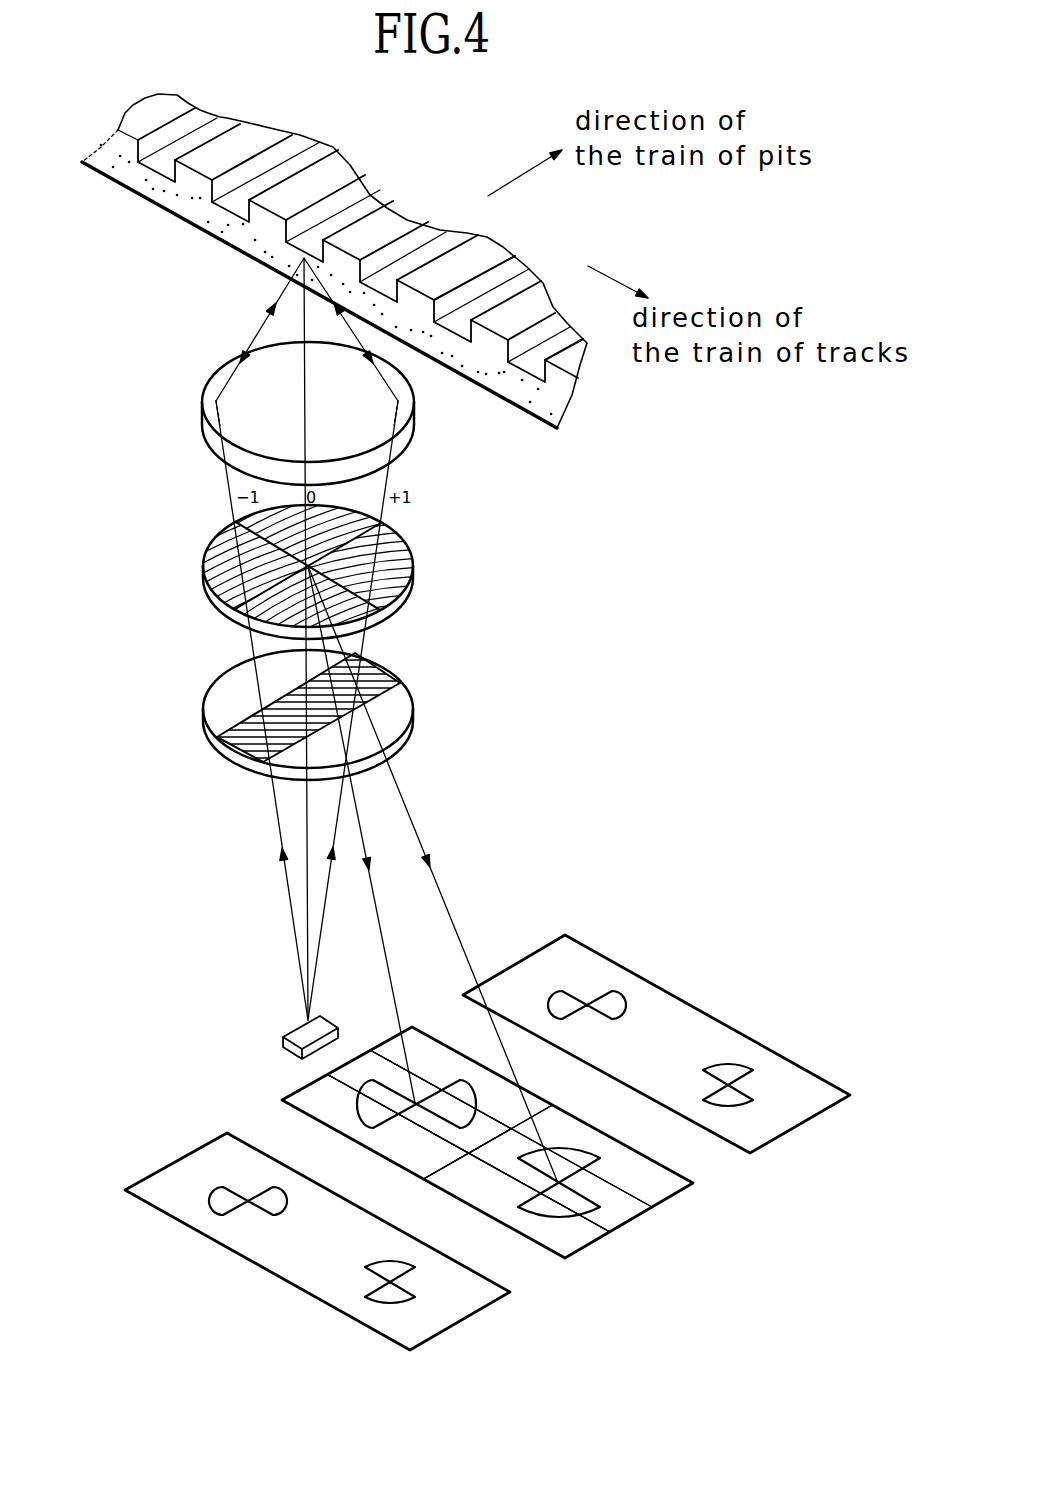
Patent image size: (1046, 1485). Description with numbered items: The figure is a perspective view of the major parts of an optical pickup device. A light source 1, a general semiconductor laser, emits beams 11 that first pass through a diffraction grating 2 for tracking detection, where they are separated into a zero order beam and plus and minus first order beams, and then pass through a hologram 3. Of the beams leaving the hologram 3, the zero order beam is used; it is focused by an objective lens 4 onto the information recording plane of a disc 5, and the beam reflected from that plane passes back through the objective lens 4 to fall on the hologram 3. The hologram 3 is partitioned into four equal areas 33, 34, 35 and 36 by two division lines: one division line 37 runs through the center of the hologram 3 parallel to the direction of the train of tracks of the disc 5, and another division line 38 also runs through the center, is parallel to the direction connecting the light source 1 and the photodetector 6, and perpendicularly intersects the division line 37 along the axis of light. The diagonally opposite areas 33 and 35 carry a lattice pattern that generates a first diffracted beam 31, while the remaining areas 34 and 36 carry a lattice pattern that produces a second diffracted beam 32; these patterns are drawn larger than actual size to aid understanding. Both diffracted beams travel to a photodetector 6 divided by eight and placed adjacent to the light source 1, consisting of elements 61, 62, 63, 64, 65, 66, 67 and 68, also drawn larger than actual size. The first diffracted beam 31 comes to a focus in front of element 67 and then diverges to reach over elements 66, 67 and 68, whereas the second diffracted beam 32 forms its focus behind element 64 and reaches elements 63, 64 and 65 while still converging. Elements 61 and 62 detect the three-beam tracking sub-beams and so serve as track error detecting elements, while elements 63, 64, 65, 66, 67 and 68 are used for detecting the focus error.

The light source 1 is at (300, 1035).
The diffraction grating 2 is at (225, 700).
The hologram 3 is at (523, 952).
The objective lens 4 is at (215, 385).
The disc 5 is at (152, 193).
The photodetector 6 is at (503, 1148).
The beams 11 is at (303, 932).
The first diffracted beam 31 is at (380, 927).
The second diffracted beam 32 is at (457, 935).
The hologram area 33 is at (215, 568).
The hologram area 34 is at (262, 520).
The hologram area 35 is at (413, 552).
The hologram area 36 is at (383, 623).
The division line 37 is at (247, 587).
The division line 38 is at (413, 587).
The photodetector element 61 is at (783, 1083).
The photodetector element 62 is at (457, 1302).
The photodetector element 63 is at (460, 1135).
The photodetector element 64 is at (623, 1218).
The photodetector element 65 is at (580, 1247).
The photodetector element 66 is at (392, 1047).
The photodetector element 67 is at (335, 1063).
The photodetector element 68 is at (295, 1093).